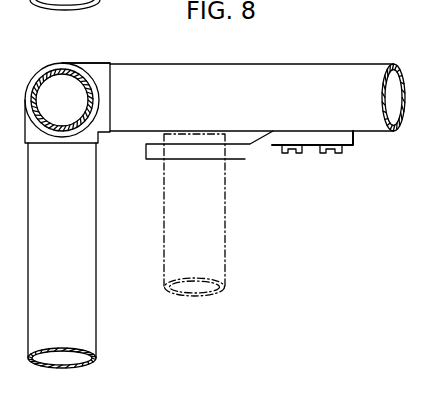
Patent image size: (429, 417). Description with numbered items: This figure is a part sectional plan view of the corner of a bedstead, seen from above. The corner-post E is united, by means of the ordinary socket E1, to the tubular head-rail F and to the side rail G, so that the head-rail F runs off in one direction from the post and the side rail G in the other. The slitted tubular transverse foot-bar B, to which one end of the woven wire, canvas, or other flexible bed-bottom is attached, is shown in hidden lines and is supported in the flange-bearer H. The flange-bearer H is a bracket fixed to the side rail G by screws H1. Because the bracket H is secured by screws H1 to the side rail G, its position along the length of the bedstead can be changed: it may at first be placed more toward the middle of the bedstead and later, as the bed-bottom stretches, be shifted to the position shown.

The corner-post E is at (67, 103).
The socket E1 is at (87, 58).
The side rail G is at (257, 97).
The tubular head-rail F is at (62, 255).
The slitted tubular transverse foot-bar B is at (194, 215).
The flange-bearer H is at (209, 154).
The screws H1 is at (319, 154).